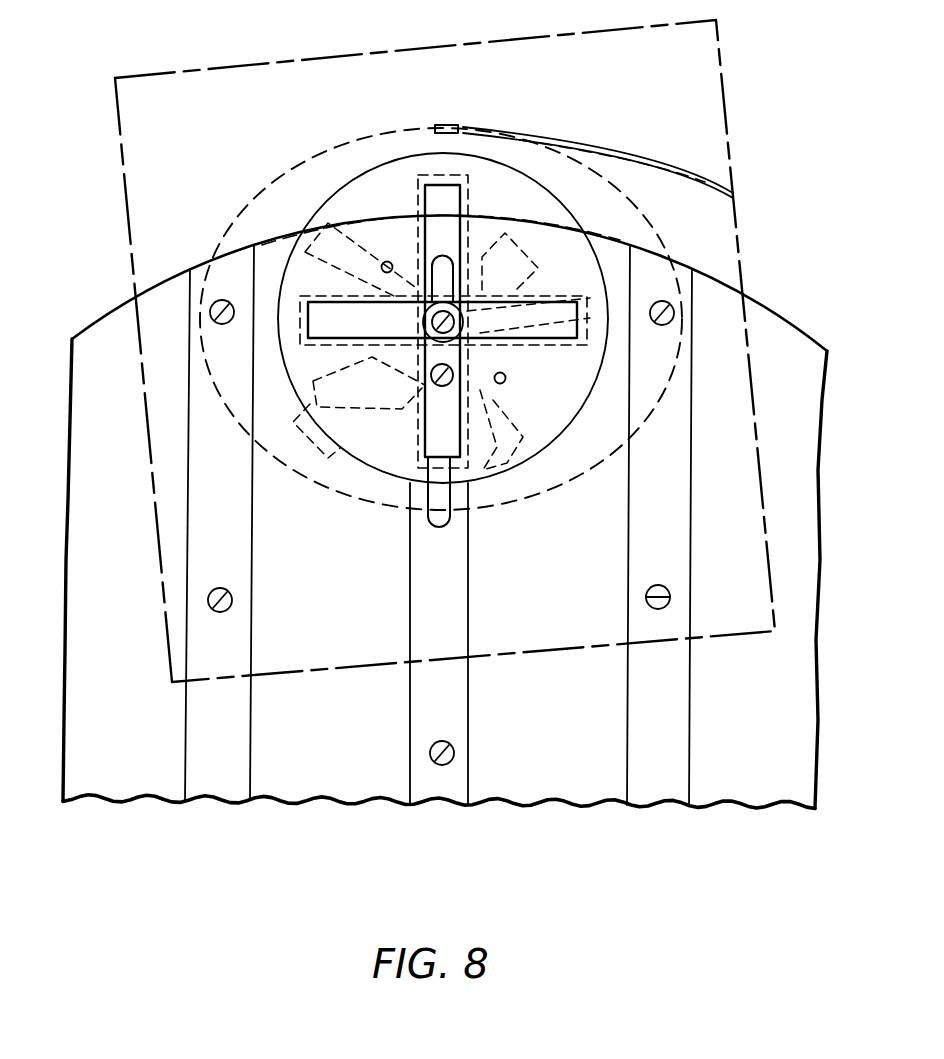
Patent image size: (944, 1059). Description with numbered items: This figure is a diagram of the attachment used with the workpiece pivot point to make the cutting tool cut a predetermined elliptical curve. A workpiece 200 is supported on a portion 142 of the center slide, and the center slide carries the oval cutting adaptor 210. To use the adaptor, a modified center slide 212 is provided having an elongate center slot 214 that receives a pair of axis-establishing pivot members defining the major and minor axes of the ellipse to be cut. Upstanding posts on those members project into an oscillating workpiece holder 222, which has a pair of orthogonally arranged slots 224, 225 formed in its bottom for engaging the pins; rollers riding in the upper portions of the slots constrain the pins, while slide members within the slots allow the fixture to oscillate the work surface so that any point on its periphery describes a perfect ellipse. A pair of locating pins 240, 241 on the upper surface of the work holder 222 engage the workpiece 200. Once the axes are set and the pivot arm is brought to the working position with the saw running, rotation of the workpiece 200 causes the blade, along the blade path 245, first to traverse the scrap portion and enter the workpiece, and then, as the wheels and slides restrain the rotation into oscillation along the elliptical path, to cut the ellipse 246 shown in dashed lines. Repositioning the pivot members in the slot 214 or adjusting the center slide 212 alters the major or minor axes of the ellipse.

The portion of the center slide 142 is at (790, 322).
The workpiece 200 is at (497, 42).
The oval cutting adaptor 210 is at (82, 216).
The modified center slide 212 is at (458, 753).
The elongate center slot 214 is at (438, 526).
The oscillating workpiece holder 222 is at (357, 187).
The orthogonal slot 224 is at (308, 303).
The orthogonal slot 225 is at (445, 193).
The locating pin 240 is at (382, 262).
The locating pin 241 is at (505, 383).
The blade path 245 is at (707, 182).
The ellipse 246 is at (373, 133).